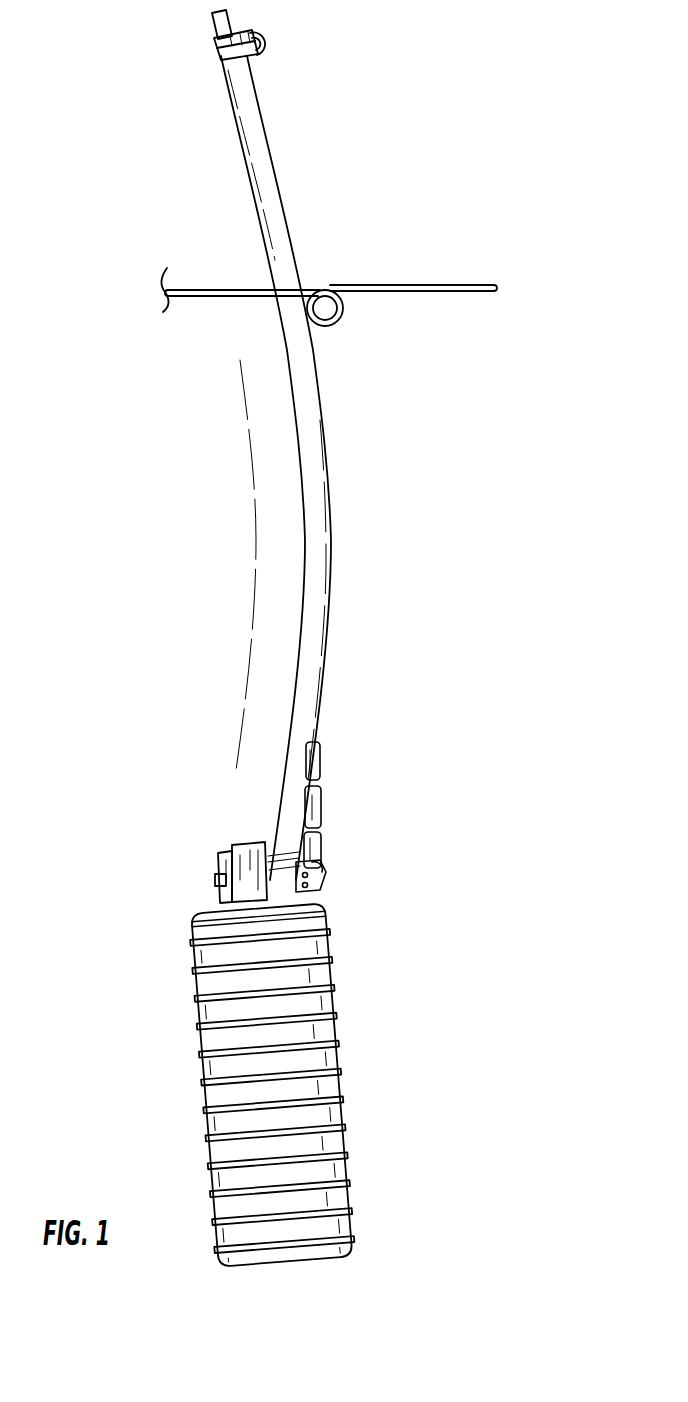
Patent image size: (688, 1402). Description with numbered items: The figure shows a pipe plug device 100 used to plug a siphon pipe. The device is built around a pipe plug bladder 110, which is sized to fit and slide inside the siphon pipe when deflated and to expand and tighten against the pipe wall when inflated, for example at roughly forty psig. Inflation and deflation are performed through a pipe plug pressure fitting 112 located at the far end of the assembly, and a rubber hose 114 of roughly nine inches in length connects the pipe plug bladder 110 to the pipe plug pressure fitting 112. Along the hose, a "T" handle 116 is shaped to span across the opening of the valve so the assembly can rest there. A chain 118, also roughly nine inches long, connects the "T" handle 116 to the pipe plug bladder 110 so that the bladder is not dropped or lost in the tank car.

The pipe plug device 100 is at (208, 465).
The pipe plug bladder 110 is at (258, 1048).
The pipe plug pressure fitting 112 is at (218, 47).
The rubber hose 114 is at (300, 612).
The "T" handle 116 is at (266, 288).
The chain 118 is at (312, 827).